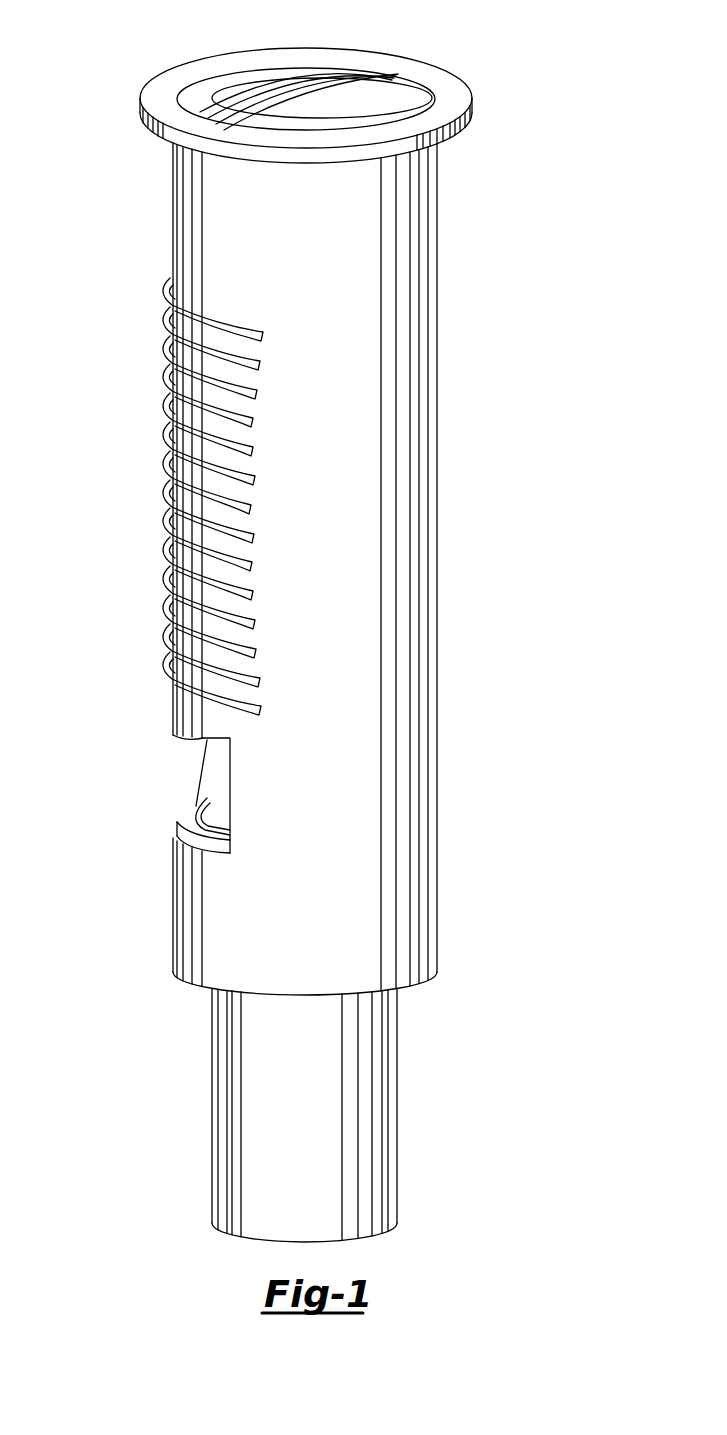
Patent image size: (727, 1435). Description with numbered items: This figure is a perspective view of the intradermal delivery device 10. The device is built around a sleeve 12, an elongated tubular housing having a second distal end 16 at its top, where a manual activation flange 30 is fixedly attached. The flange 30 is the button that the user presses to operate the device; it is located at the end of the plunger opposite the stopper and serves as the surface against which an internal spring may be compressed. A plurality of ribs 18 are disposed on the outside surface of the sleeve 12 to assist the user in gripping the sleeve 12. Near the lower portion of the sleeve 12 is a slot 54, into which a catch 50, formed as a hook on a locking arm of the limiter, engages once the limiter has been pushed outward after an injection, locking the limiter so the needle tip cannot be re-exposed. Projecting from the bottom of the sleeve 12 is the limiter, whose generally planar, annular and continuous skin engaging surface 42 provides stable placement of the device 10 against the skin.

The intradermal delivery device 10 is at (474, 301).
The sleeve 12 is at (316, 257).
The second distal end 16 is at (472, 117).
The ribs 18 is at (168, 347).
The manual activation flange 30 is at (385, 92).
The skin engaging surface 42 is at (362, 1240).
The catch 50 is at (213, 782).
The slot 54 is at (188, 753).